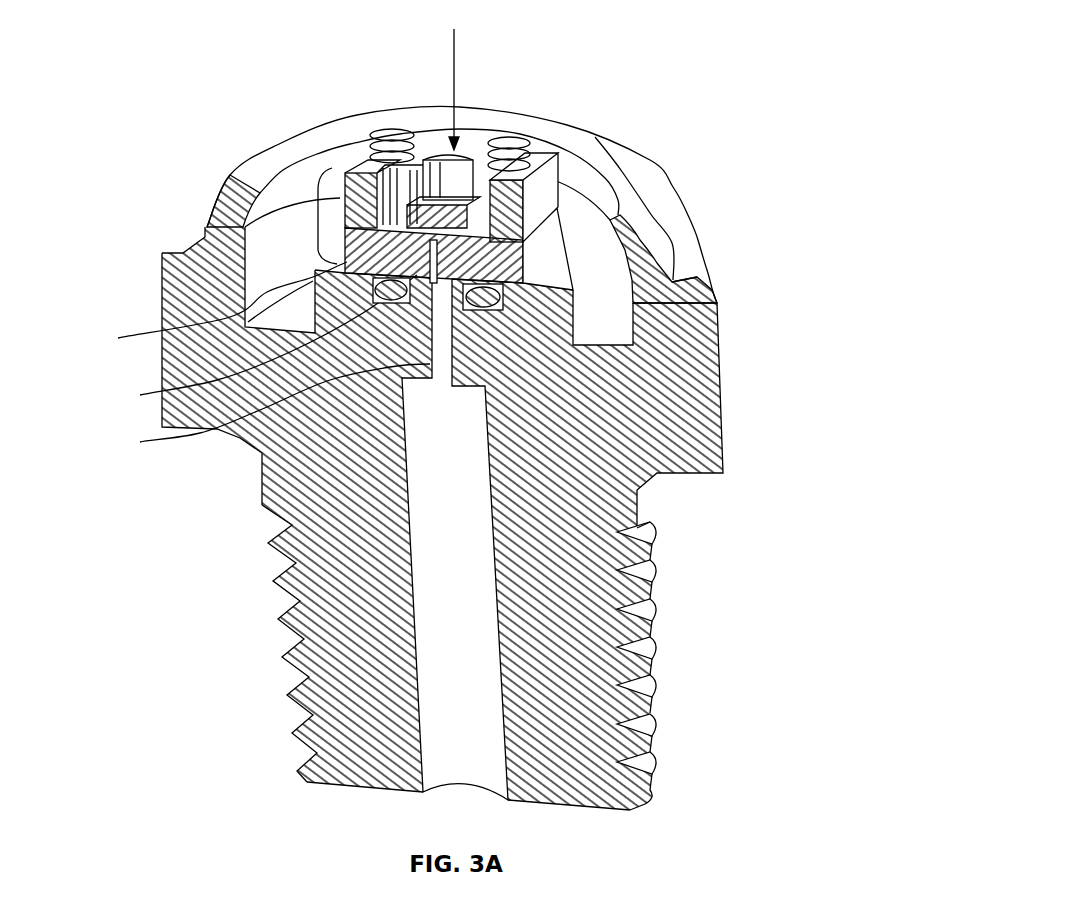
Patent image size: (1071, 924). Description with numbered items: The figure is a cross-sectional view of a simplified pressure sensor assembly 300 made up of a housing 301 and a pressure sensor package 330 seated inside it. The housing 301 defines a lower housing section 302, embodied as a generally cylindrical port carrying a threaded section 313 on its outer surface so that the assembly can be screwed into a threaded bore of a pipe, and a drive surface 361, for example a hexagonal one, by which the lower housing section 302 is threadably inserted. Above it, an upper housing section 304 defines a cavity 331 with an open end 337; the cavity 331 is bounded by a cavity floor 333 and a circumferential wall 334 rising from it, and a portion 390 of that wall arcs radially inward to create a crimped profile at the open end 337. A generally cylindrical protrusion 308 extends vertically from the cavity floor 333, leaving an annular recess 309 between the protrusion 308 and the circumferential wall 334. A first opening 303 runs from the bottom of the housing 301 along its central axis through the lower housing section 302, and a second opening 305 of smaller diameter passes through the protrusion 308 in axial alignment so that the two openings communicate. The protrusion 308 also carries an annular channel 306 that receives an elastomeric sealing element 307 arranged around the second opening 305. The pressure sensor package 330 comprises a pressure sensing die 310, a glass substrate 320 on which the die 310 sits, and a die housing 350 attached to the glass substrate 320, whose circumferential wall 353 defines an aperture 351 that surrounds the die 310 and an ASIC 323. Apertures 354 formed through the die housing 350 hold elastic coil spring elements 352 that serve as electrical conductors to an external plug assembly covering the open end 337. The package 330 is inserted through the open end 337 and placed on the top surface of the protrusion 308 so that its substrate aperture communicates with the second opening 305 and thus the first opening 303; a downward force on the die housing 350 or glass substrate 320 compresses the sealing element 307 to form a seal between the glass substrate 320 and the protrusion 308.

The pressure sensor assembly 300 is at (711, 55).
The housing 301 is at (295, 468).
The lower housing section 302 is at (668, 530).
The first opening 303 is at (455, 539).
The upper housing section 304 is at (810, 111).
The second opening 305 is at (256, 409).
The channel 306 is at (209, 307).
The sealing element 307 is at (251, 341).
The protrusion 308 is at (630, 252).
The annular recess 309 is at (615, 318).
The pressure sensing die 310 is at (455, 168).
The threaded section 313 is at (292, 732).
The glass substrate 320 is at (620, 215).
The ASIC 323 is at (415, 148).
The pressure sensor package 330 is at (243, 227).
The cavity 331 is at (291, 250).
The cavity floor 333 is at (637, 345).
The circumferential wall 334 is at (697, 282).
The open end 337 is at (276, 176).
The die housing 350 is at (518, 175).
The aperture 351 is at (475, 158).
The spring elements 352 is at (362, 125).
The circumferential wall 353 is at (555, 245).
The apertures 354 is at (283, 162).
The drive surface 361 is at (727, 441).
The portion of wall 390 is at (222, 220).